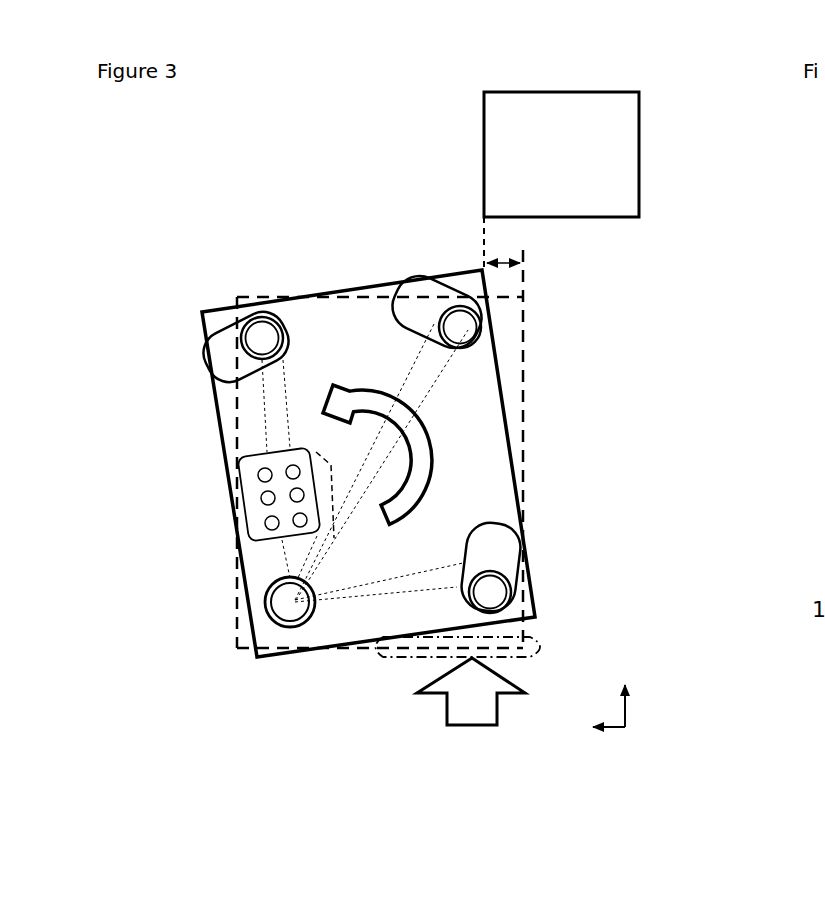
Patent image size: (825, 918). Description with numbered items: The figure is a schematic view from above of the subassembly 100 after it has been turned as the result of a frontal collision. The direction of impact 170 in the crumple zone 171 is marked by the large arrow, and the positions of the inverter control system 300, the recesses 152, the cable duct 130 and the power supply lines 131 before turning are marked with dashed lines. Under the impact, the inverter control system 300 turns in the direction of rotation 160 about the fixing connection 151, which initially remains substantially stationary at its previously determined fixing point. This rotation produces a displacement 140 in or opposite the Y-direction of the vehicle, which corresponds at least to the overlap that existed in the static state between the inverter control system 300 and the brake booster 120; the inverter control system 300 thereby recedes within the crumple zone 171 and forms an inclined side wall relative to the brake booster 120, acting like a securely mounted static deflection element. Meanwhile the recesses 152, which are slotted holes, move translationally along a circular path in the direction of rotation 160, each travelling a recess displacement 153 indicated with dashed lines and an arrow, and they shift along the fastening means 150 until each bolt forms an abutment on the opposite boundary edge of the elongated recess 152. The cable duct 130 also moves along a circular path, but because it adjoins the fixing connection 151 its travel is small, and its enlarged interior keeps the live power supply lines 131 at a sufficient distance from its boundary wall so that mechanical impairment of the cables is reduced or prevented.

The subassembly 100 is at (217, 248).
The brake booster 120 is at (620, 162).
The cable duct 130 is at (224, 508).
The power supply lines 131 is at (262, 503).
The displacement 140 is at (523, 279).
The fastening means 150 is at (447, 414).
The fixing connection 151 is at (270, 630).
The recesses 152 is at (432, 296).
The recess displacement 153 is at (447, 340).
The direction of rotation 160 is at (416, 478).
The direction of impact 170 is at (473, 705).
The crumple zone 171 is at (523, 657).
The inverter control system 300 is at (353, 612).